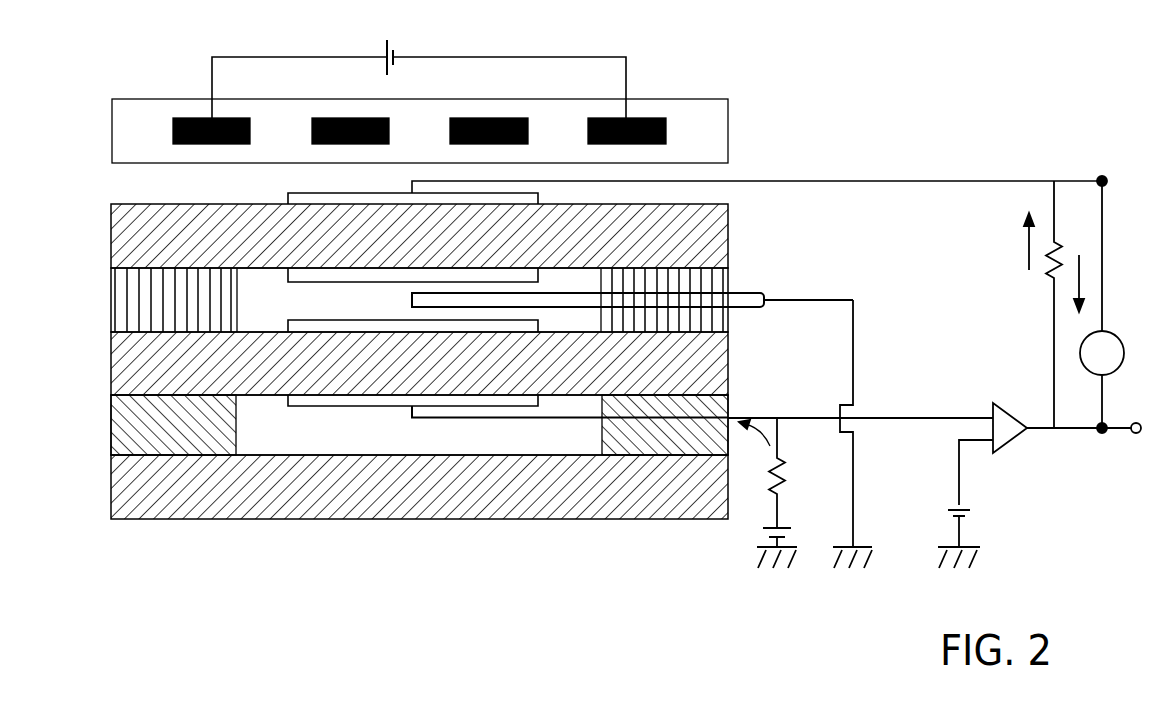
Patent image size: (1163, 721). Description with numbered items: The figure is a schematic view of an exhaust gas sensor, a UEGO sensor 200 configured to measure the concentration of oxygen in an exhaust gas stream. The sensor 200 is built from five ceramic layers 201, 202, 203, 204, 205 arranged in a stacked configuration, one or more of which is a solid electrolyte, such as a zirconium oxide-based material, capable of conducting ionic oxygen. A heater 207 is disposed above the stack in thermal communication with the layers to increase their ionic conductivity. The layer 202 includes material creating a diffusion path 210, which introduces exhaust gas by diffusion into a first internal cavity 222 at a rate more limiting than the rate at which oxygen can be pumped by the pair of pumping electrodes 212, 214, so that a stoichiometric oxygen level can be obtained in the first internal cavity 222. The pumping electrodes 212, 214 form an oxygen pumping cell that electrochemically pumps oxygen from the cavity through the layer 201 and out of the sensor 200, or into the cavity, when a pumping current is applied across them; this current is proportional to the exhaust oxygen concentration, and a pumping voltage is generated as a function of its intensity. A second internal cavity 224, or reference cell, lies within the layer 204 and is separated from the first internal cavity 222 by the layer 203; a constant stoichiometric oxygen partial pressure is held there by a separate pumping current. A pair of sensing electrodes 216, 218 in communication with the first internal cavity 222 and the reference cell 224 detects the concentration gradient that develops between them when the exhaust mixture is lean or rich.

The UEGO sensor 200 is at (723, 44).
The layer 201 is at (111, 215).
The layer 202 is at (111, 278).
The layer 203 is at (111, 383).
The layer 204 is at (111, 445).
The layer 205 is at (111, 508).
The heater 207 is at (173, 121).
The diffusion path 210 is at (142, 312).
The pumping electrode 212 is at (288, 195).
The pumping electrode 214 is at (288, 281).
The sensing electrode 216 is at (288, 320).
The sensing electrode 218 is at (288, 404).
The first internal cavity 222 is at (377, 308).
The second internal cavity 224 is at (377, 440).